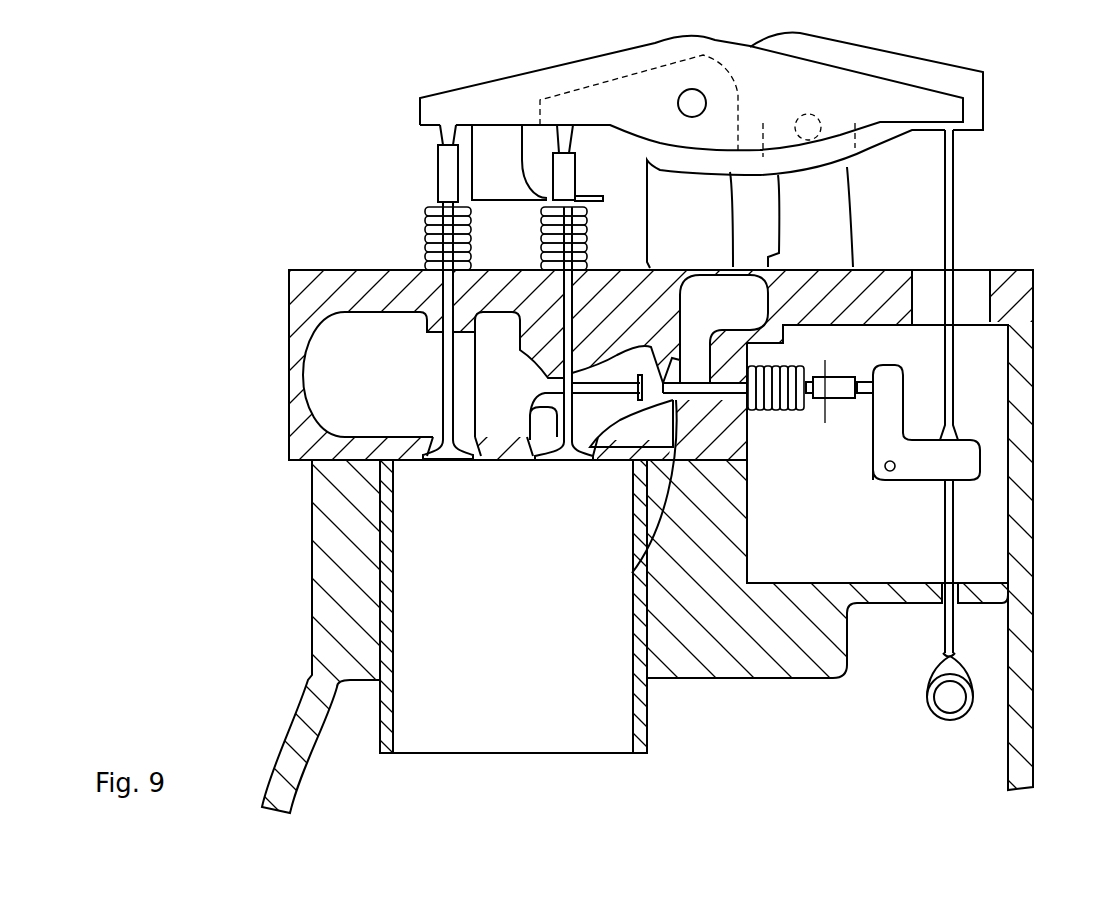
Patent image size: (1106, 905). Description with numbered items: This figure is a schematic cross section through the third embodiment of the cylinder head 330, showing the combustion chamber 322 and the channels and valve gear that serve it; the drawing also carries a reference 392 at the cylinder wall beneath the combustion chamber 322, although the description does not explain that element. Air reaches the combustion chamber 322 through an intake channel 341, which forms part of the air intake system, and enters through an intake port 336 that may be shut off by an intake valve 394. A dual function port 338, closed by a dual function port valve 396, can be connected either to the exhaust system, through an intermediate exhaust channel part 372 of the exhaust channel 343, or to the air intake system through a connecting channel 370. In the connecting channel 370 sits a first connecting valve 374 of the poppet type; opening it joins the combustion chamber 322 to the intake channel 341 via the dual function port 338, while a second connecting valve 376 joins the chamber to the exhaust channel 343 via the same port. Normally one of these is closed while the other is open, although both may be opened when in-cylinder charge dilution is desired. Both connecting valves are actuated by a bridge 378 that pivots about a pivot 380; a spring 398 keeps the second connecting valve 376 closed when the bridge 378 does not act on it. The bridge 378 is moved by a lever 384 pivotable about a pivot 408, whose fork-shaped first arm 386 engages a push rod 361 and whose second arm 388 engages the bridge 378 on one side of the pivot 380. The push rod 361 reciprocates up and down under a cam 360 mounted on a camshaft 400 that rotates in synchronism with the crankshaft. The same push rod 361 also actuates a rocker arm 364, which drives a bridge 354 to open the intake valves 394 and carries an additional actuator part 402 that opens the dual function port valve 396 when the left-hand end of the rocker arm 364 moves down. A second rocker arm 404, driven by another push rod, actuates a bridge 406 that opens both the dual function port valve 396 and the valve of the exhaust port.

The combustion chamber 322 is at (520, 623).
The cylinder head 330 is at (270, 344).
The intake port 336 is at (427, 447).
The dual function port 338 is at (581, 453).
The intake channel 341 is at (360, 386).
The exhaust channel 343 is at (705, 314).
The bridge 354 is at (440, 173).
The cam 360 is at (953, 670).
The push rod 361 is at (950, 397).
The rocker arm 364 is at (858, 92).
The connecting channel 370 is at (530, 375).
The intermediate exhaust channel part 372 is at (612, 420).
The first connecting valve 374 is at (543, 400).
The second connecting valve 376 is at (632, 573).
The bridge 378 is at (838, 380).
The pivot 380 is at (843, 418).
The lever 384 is at (910, 488).
The first arm 386 is at (930, 450).
The second arm 388 is at (890, 393).
The cylinder liner 392 is at (388, 730).
The intake valve 394 is at (452, 460).
The dual function port valve 396 is at (562, 458).
The spring 398 is at (770, 412).
The camshaft 400 is at (950, 703).
The additional actuator part 402 is at (545, 200).
The second rocker arm 404 is at (952, 72).
The bridge 406 is at (567, 165).
The pivot 408 is at (887, 470).